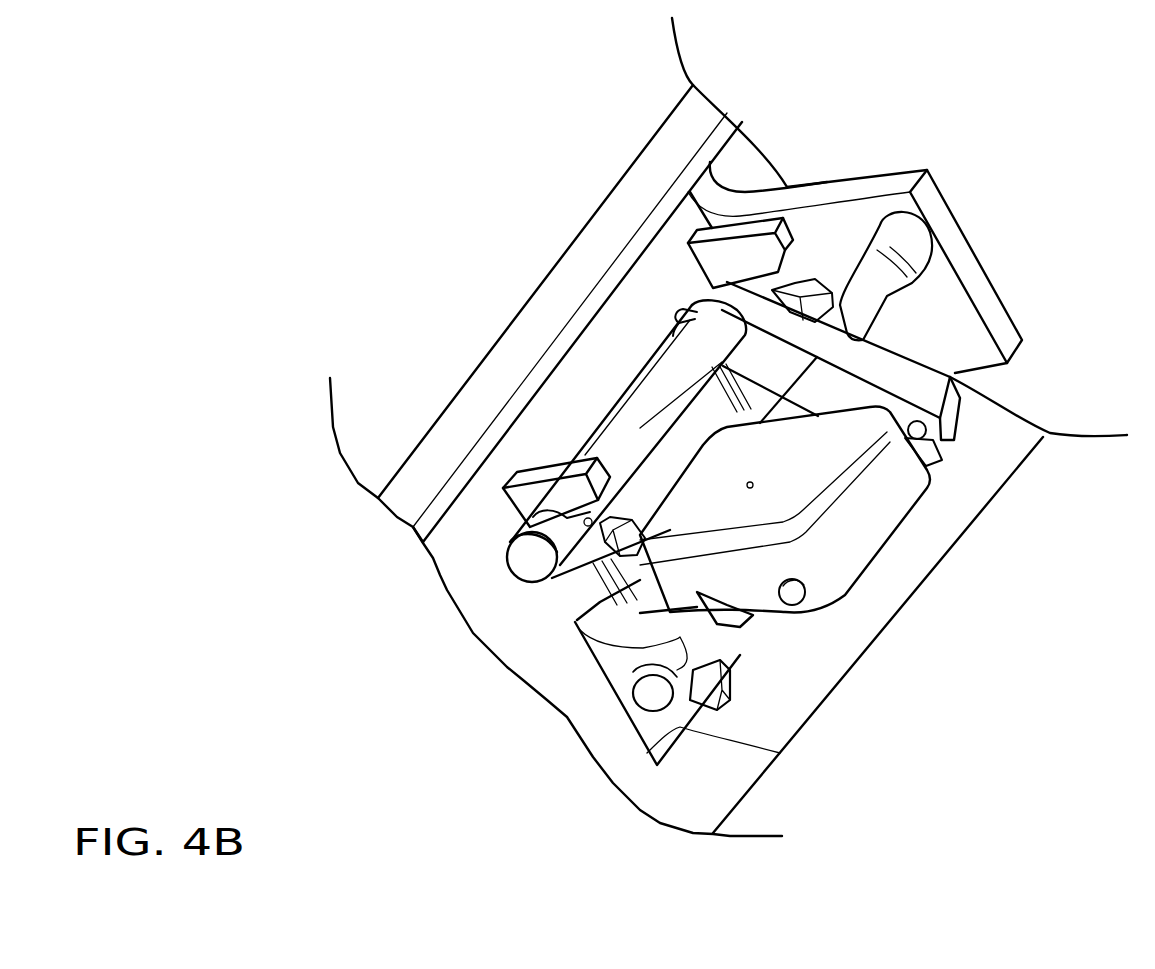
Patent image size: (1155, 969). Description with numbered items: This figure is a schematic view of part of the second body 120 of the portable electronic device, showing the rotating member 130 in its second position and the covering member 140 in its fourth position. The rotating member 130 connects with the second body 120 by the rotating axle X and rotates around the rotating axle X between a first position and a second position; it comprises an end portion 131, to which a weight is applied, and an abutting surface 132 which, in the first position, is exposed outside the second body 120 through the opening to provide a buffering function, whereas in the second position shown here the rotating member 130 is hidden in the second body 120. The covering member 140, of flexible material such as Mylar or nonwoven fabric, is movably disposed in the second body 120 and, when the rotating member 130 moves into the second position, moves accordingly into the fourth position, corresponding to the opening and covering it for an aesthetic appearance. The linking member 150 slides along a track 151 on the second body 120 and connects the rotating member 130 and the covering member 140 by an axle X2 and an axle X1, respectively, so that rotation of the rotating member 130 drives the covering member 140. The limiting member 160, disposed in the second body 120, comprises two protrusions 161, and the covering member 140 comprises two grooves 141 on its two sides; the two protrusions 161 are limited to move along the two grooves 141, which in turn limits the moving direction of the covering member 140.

The second body 120 is at (543, 420).
The covering member 140 is at (683, 450).
The grooves 141 is at (733, 397).
The linking member 150 is at (930, 393).
The track 151 is at (924, 231).
The limiting member 160 is at (535, 562).
The protrusions 161 is at (683, 312).
The rotating member 130 is at (787, 611).
The end portion 131 is at (845, 540).
The abutting surface 132 is at (657, 697).
The rotating axle X is at (750, 485).
The axle X1 is at (588, 523).
The axle X2 is at (918, 433).